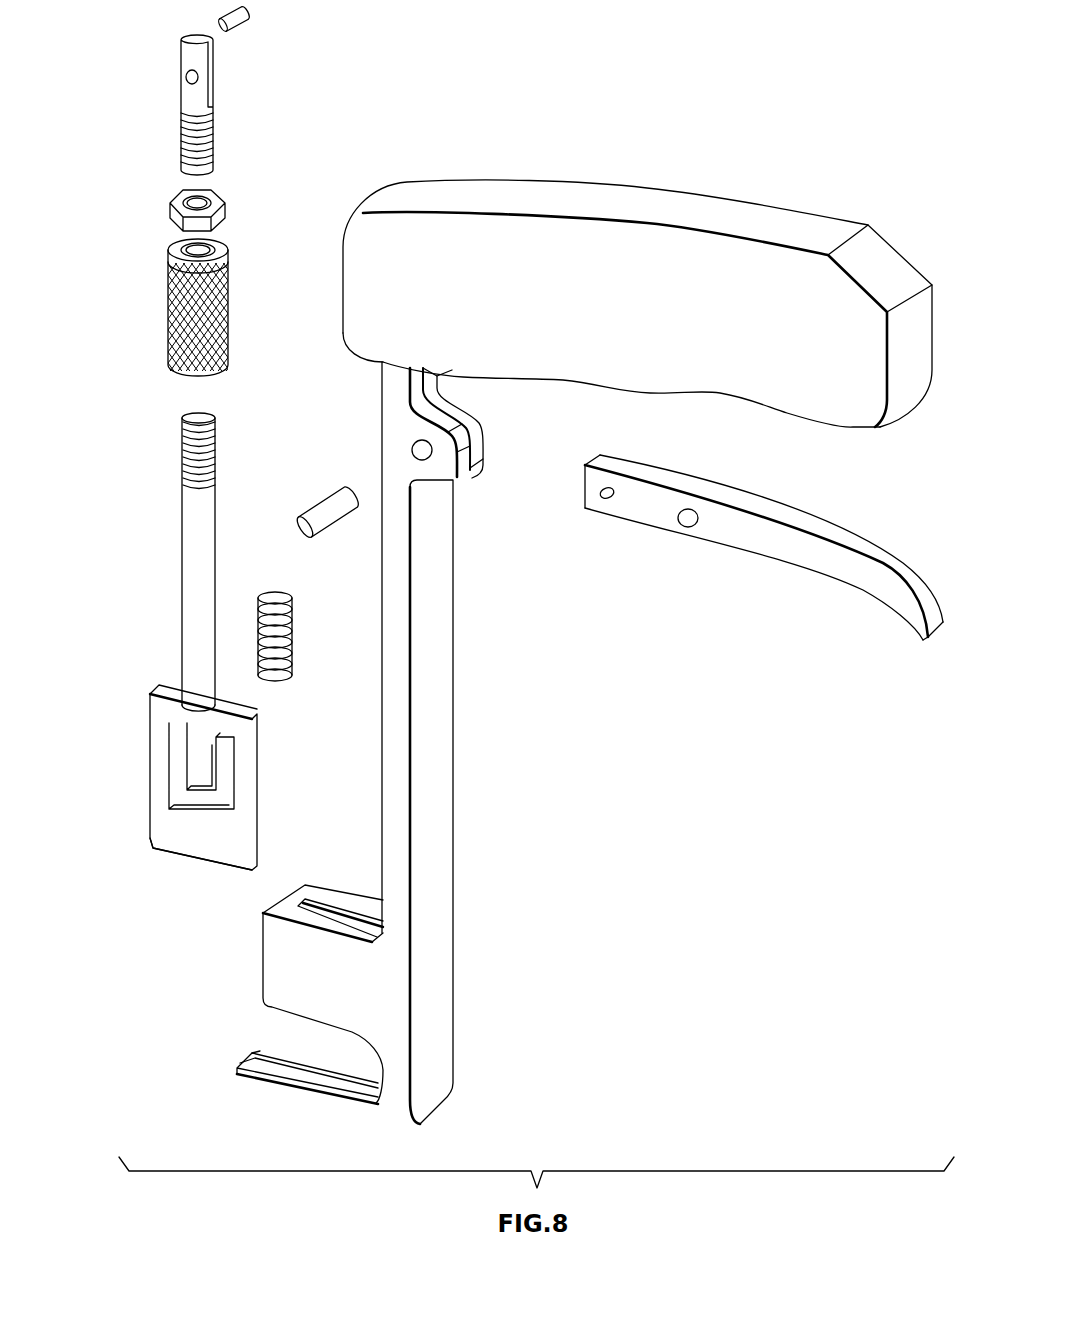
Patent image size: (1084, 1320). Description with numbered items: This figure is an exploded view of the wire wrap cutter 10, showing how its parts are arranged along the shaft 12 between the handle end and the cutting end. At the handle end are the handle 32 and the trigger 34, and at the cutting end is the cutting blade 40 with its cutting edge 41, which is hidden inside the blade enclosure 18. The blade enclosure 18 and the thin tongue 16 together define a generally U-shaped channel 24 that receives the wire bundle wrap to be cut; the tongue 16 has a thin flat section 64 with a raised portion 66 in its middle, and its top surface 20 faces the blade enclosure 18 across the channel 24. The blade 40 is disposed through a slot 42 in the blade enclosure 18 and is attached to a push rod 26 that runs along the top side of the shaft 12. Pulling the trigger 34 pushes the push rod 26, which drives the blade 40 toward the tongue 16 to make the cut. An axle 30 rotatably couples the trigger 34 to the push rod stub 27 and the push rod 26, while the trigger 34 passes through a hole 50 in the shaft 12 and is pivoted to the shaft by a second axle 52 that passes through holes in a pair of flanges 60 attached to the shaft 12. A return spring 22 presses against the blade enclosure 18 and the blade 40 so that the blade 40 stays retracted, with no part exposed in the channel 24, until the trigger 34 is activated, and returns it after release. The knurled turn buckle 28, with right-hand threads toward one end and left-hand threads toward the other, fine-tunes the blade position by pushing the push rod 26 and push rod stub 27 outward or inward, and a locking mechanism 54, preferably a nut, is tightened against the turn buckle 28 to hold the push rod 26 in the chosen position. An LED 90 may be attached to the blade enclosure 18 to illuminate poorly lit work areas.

The clamp assembly 10 is at (785, 68).
The shaft 12 is at (356, 744).
The tongue 16 is at (276, 1070).
The blade enclosure 18 is at (273, 967).
The top surface of block 20 is at (284, 913).
The return spring 22 is at (294, 628).
The U-shaped channel 24 is at (278, 1016).
The push rod 26 is at (192, 575).
The push rod stub 27 is at (181, 126).
The turn buckle 28 is at (173, 302).
The axle 30 is at (247, 26).
The handle 32 is at (807, 226).
The trigger 34 is at (797, 552).
The cutting blade 40 is at (232, 804).
The cutting edge 41 is at (254, 875).
The slot 42 is at (332, 909).
The hole 50 is at (463, 418).
The axle 52 is at (331, 511).
The locking mechanism 54 is at (221, 212).
The flanges 60 is at (483, 455).
The thin flat section 64 is at (268, 1074).
The raised portion 66 is at (281, 1062).
The LED 90 is at (335, 1050).